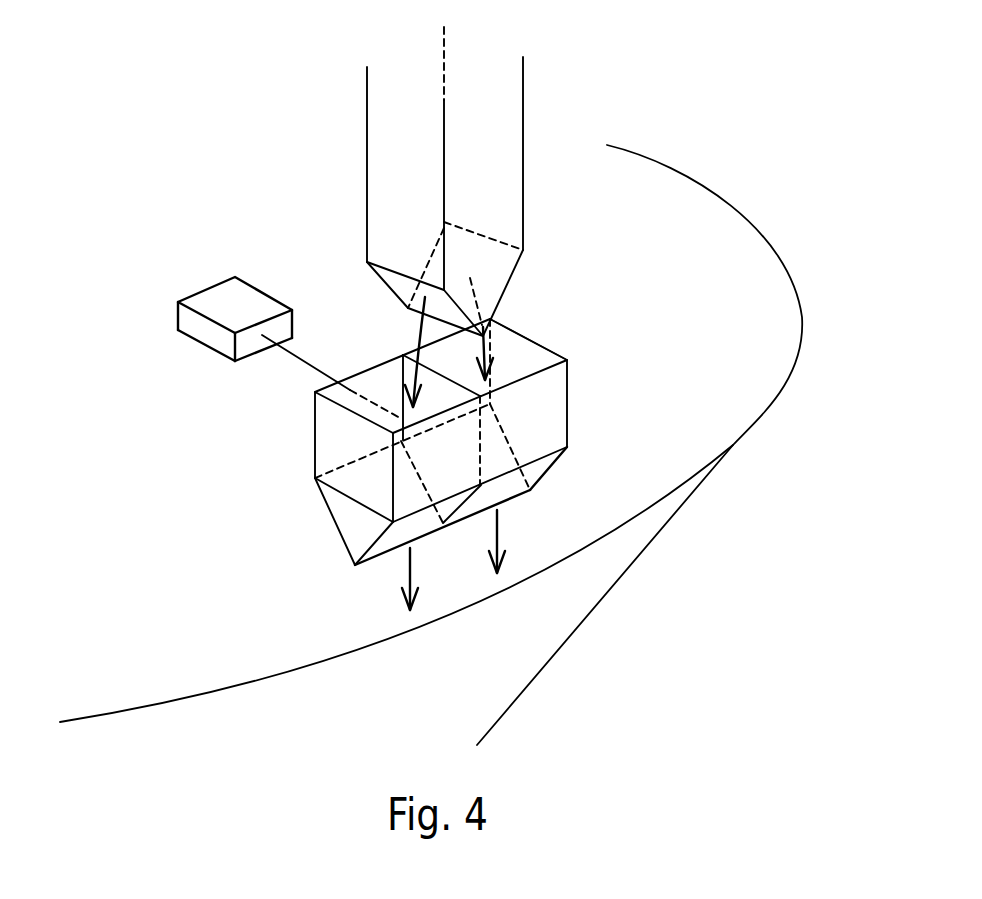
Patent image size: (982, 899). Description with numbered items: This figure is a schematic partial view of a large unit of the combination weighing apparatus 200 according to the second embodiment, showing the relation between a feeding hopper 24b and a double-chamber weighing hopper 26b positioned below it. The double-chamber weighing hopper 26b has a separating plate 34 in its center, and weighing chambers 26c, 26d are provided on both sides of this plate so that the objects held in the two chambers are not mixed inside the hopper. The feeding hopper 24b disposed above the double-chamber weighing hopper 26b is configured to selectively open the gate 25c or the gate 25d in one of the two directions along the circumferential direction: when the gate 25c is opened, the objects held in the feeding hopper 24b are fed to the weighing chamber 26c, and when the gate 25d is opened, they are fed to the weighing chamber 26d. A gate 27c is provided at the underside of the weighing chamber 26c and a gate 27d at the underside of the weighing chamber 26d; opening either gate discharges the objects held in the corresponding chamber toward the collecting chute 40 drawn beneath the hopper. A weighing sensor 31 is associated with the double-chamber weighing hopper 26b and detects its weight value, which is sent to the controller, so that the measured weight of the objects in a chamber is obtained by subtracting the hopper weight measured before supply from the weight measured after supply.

The combination weighing apparatus 200 is at (804, 46).
The feeding hopper 24b is at (524, 200).
The gate 25c is at (400, 298).
The gate 25d is at (507, 290).
The double-chamber weighing hopper 26b is at (576, 382).
The weighing chamber 26c is at (350, 392).
The weighing chamber 26d is at (516, 350).
The gate 27c is at (378, 560).
The gate 27d is at (505, 503).
The weighing sensor 31 is at (210, 287).
The separating plate 34 is at (427, 372).
The collecting chute 40 is at (593, 610).